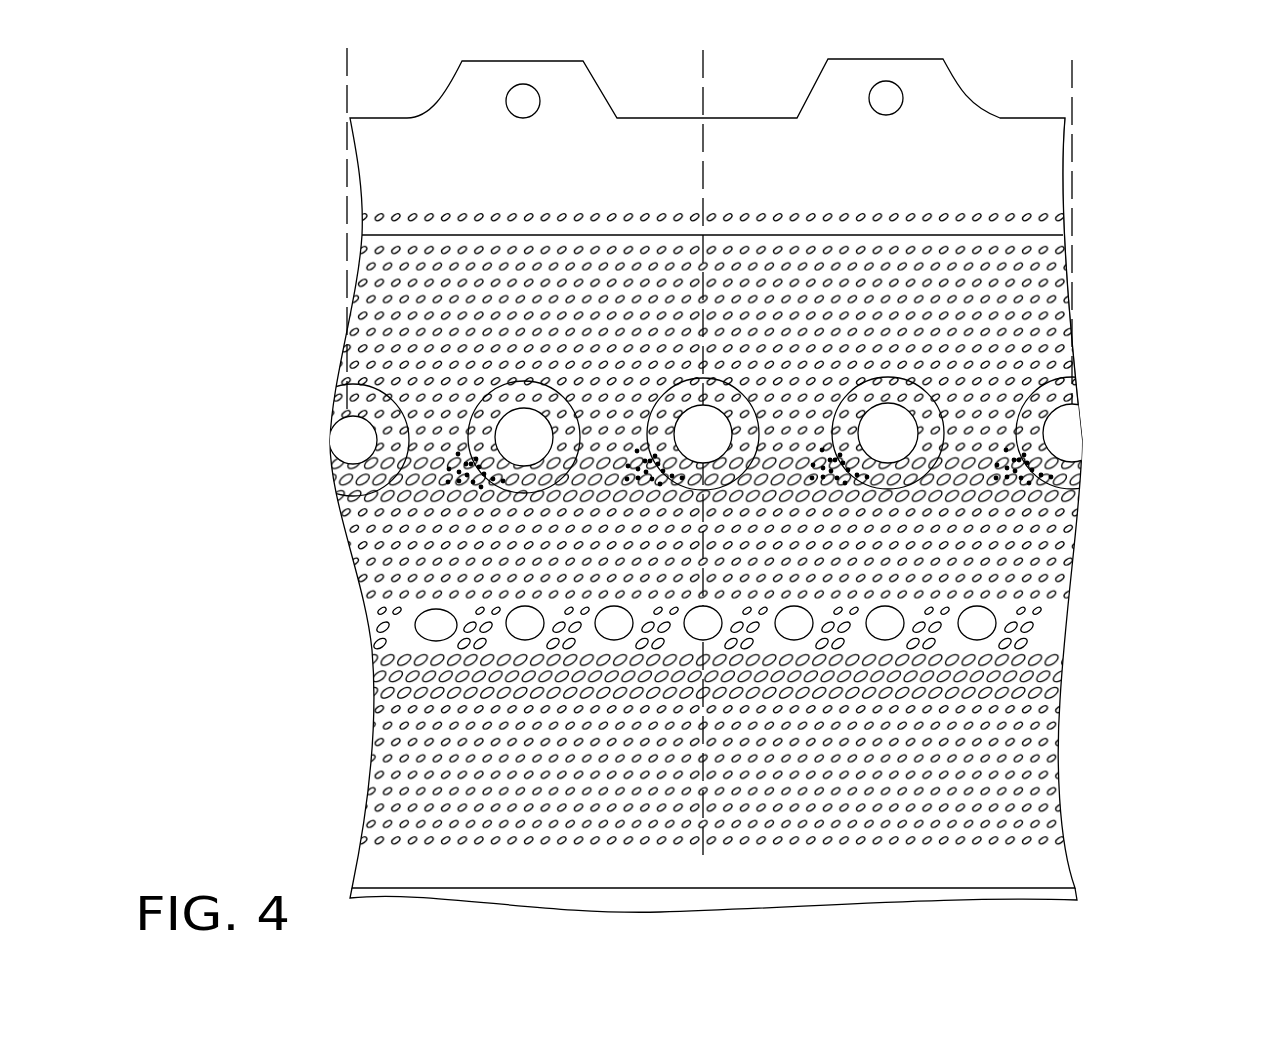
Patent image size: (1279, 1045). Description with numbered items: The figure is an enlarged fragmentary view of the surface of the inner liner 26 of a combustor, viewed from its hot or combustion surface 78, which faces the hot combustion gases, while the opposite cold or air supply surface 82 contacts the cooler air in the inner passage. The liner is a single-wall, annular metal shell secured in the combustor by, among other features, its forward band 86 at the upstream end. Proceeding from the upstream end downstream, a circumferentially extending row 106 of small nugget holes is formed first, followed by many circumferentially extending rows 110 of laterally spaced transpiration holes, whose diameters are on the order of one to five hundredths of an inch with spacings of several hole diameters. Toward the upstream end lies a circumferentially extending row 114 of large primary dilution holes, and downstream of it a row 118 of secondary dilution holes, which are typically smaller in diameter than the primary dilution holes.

The inner liner 26 is at (975, 92).
The hot or combustion surface 78 is at (773, 102).
The cold or air supply surface 82 is at (1036, 168).
The forward band 86 is at (1044, 88).
The row of nugget holes 106 is at (874, 197).
The rows of transpiration holes 110 is at (1076, 318).
The row of primary dilution holes 114 is at (531, 456).
The row of secondary dilution holes 118 is at (530, 608).